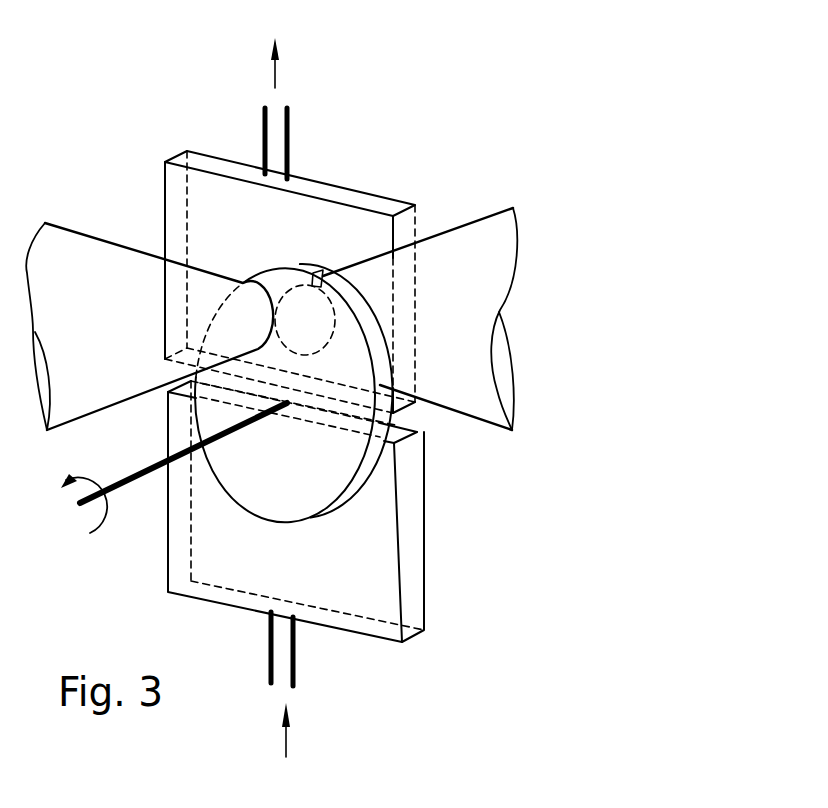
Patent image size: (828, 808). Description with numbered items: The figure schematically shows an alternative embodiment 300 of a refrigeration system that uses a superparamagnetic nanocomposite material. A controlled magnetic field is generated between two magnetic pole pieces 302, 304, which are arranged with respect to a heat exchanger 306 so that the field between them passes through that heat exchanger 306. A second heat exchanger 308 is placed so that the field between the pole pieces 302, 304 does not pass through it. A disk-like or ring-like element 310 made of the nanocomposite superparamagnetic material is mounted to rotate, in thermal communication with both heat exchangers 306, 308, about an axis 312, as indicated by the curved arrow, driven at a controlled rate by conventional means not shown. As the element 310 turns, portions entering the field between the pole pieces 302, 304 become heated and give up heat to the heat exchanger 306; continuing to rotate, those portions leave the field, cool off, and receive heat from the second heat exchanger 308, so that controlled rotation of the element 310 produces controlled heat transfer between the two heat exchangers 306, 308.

The alternative embodiment 300 is at (172, 117).
The magnetic pole piece 302 is at (115, 242).
The magnetic pole piece 304 is at (476, 220).
The heat exchanger 306 is at (348, 197).
The second heat exchanger 308 is at (413, 602).
The disk-like or ring-like element 310 is at (370, 470).
The axis 312 is at (141, 494).